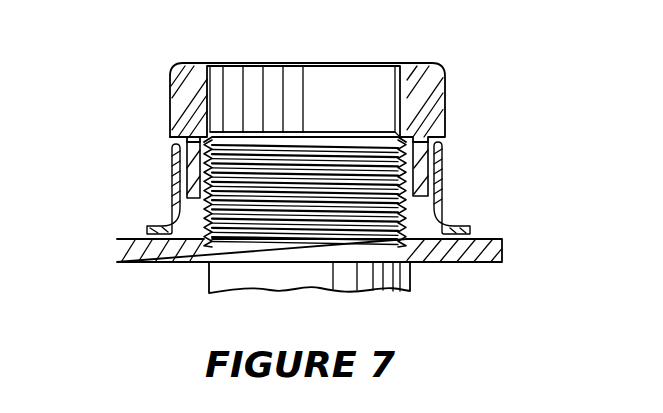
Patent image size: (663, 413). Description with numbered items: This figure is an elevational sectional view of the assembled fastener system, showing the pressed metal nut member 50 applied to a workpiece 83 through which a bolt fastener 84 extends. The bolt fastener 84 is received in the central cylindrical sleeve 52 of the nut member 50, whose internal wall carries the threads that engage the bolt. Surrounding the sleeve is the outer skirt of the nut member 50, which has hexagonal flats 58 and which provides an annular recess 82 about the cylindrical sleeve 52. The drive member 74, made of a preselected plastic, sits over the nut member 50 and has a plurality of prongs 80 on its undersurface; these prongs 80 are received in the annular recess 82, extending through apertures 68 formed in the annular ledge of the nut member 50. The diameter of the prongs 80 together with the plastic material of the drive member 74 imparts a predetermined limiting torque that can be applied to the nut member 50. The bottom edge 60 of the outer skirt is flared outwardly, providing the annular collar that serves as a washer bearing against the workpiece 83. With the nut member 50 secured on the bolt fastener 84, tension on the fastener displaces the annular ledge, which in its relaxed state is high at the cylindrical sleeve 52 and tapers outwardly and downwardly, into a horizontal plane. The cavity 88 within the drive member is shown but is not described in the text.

The pressed metal nut member 50 is at (309, 182).
The central cylindrical sleeve 52 is at (428, 142).
The hexagonal flats 58 is at (447, 213).
The bottom edge 60 is at (150, 232).
The apertures 68 is at (183, 140).
The drive member 74 is at (412, 66).
The prongs 80 is at (173, 162).
The annular recess 82 is at (185, 181).
The workpiece 83 is at (503, 251).
The bolt fastener 84 is at (335, 142).
The nut cavity 88 is at (263, 99).